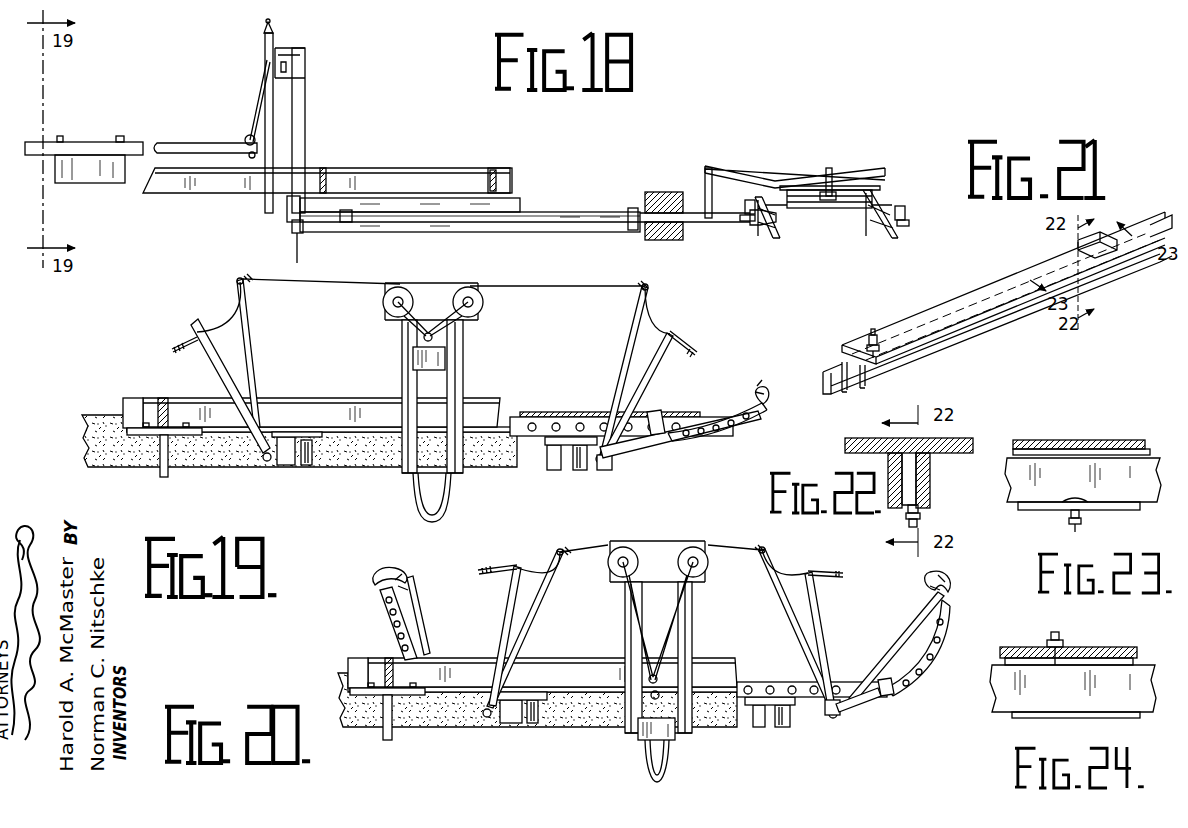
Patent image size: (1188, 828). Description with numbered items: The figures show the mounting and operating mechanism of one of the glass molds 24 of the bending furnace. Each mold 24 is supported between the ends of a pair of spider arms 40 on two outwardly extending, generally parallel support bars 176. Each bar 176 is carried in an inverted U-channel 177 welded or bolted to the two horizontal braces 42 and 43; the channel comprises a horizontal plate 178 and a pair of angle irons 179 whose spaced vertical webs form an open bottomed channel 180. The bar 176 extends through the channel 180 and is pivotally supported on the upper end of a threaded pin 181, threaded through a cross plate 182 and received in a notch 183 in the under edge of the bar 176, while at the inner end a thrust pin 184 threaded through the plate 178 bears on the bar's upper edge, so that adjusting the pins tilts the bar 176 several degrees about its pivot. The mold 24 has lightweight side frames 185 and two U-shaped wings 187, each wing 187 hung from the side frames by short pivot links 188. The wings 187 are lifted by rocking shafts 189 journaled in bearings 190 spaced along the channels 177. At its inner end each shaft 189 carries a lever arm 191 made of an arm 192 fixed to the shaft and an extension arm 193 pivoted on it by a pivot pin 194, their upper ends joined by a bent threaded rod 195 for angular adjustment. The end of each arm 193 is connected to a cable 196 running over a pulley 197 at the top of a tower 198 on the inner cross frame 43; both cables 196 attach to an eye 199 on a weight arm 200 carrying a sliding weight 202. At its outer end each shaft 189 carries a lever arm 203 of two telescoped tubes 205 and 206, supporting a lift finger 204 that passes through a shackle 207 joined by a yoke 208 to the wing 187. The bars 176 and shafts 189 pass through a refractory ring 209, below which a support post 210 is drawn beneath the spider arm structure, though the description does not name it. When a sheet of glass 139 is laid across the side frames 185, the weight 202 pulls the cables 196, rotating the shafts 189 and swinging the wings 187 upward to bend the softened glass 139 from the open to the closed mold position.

In FIG. 18, the glass mold 24 is at (806, 240).
In FIG. 21, the glass mold 24 is at (912, 321).
In FIG. 18, the spider arm 40 is at (367, 168).
In FIG. 19, the spider arm 40 is at (152, 398).
In FIG. 20, the spider arm 40 is at (384, 658).
In FIG. 18, the horizontal brace 42 is at (514, 174).
In FIG. 18, the inner cross frame 43 is at (326, 178).
In FIG. 19, the inner cross frame 43 is at (320, 400).
In FIG. 20, the inner cross frame 43 is at (545, 658).
In FIG. 19, the sheet of glass 139 is at (549, 417).
In FIG. 20, the sheet of glass 139 is at (812, 689).
In FIG. 18, the support bar 176 is at (575, 204).
In FIG. 21, the support bar 176 is at (830, 370).
In FIG. 19, the support bar 176 is at (302, 470).
In FIG. 20, the support bar 176 is at (532, 724).
In FIG. 23, the support bar 176 is at (1151, 457).
In FIG. 24, the support bar 176 is at (1020, 706).
In FIG. 18, the inverted U-channel 177 is at (455, 228).
In FIG. 21, the inverted U-channel 177 is at (956, 287).
In FIG. 19, the inverted U-channel 177 is at (290, 468).
In FIG. 20, the inverted U-channel 177 is at (522, 723).
In FIG. 22, the inverted U-channel 177 is at (845, 448).
In FIG. 21, the horizontal plate 178 is at (989, 278).
In FIG. 22, the horizontal plate 178 is at (970, 438).
In FIG. 23, the horizontal plate 178 is at (1086, 440).
In FIG. 24, the horizontal plate 178 is at (1112, 648).
In FIG. 22, the angle iron 179 is at (849, 455).
In FIG. 19, the open bottomed channel 180 is at (306, 470).
In FIG. 20, the open bottomed channel 180 is at (546, 731).
In FIG. 22, the open bottomed channel 180 is at (920, 510).
In FIG. 23, the open bottomed channel 180 is at (1014, 450).
In FIG. 24, the open bottomed channel 180 is at (1005, 661).
In FIG. 23, the threaded pin 181 is at (1081, 524).
In FIG. 21, the cross plate 182 is at (1100, 272).
In FIG. 22, the cross plate 182 is at (906, 516).
In FIG. 23, the cross plate 182 is at (1060, 512).
In FIG. 23, the notch 183 is at (1100, 505).
In FIG. 21, the thrust pin 184 is at (873, 332).
In FIG. 24, the thrust pin 184 is at (1060, 636).
In FIG. 19, the side frame 185 is at (528, 446).
In FIG. 20, the side frame 185 is at (746, 690).
In FIG. 18, the wing 187 is at (872, 222).
In FIG. 19, the wing 187 is at (737, 439).
In FIG. 20, the wing 187 is at (383, 600).
In FIG. 19, the pivot link 188 is at (662, 418).
In FIG. 20, the pivot link 188 is at (890, 692).
In FIG. 18, the rocking shaft 189 is at (394, 243).
In FIG. 18, the bearing 190 is at (343, 221).
In FIG. 19, the bearing 190 is at (263, 461).
In FIG. 20, the bearing 190 is at (485, 720).
In FIG. 18, the lever arm 191 is at (274, 128).
In FIG. 19, the lever arm 191 is at (211, 366).
In FIG. 20, the lever arm 191 is at (495, 617).
In FIG. 18, the arm 192 is at (271, 147).
In FIG. 19, the arm 192 is at (232, 356).
In FIG. 20, the arm 192 is at (508, 580).
In FIG. 18, the extension arm 193 is at (280, 148).
In FIG. 19, the extension arm 193 is at (257, 356).
In FIG. 20, the extension arm 193 is at (533, 616).
In FIG. 18, the pivot pin 194 is at (262, 198).
In FIG. 19, the pivot pin 194 is at (270, 425).
In FIG. 20, the pivot pin 194 is at (484, 690).
In FIG. 18, the bent threaded rod 195 is at (274, 88).
In FIG. 19, the bent threaded rod 195 is at (226, 312).
In FIG. 20, the bent threaded rod 195 is at (540, 560).
In FIG. 19, the cable 196 is at (352, 278).
In FIG. 20, the cable 196 is at (600, 545).
In FIG. 18, the pulley 197 is at (274, 44).
In FIG. 19, the pulley 197 is at (383, 302).
In FIG. 20, the pulley 197 is at (608, 562).
In FIG. 19, the tower 198 is at (465, 385).
In FIG. 20, the tower 198 is at (692, 630).
In FIG. 18, the eye 199 is at (251, 135).
In FIG. 19, the eye 199 is at (440, 328).
In FIG. 20, the eye 199 is at (666, 680).
In FIG. 18, the weight arm 200 is at (162, 143).
In FIG. 19, the weight arm 200 is at (436, 338).
In FIG. 20, the weight arm 200 is at (677, 740).
In FIG. 18, the weight 202 is at (82, 186).
In FIG. 19, the weight 202 is at (446, 358).
In FIG. 20, the weight 202 is at (637, 740).
In FIG. 18, the lever arm 203 is at (702, 183).
In FIG. 19, the lever arm 203 is at (648, 456).
In FIG. 20, the lever arm 203 is at (412, 625).
In FIG. 18, the lift finger 204 is at (764, 173).
In FIG. 19, the lift finger 204 is at (762, 398).
In FIG. 20, the lift finger 204 is at (378, 579).
In FIG. 19, the telescoped tube 205 is at (604, 462).
In FIG. 20, the telescoped tube 205 is at (841, 713).
In FIG. 19, the telescoped tube 206 is at (656, 455).
In FIG. 20, the telescoped tube 206 is at (862, 700).
In FIG. 18, the shackle 207 is at (834, 168).
In FIG. 19, the shackle 207 is at (766, 402).
In FIG. 20, the shackle 207 is at (930, 575).
In FIG. 18, the yoke 208 is at (864, 186).
In FIG. 19, the yoke 208 is at (766, 414).
In FIG. 20, the yoke 208 is at (404, 590).
In FIG. 18, the refractory ring 209 is at (684, 232).
In FIG. 19, the refractory ring 209 is at (345, 468).
In FIG. 20, the refractory ring 209 is at (738, 735).
In FIG. 19, the post 210 is at (168, 477).
In FIG. 20, the post 210 is at (393, 740).